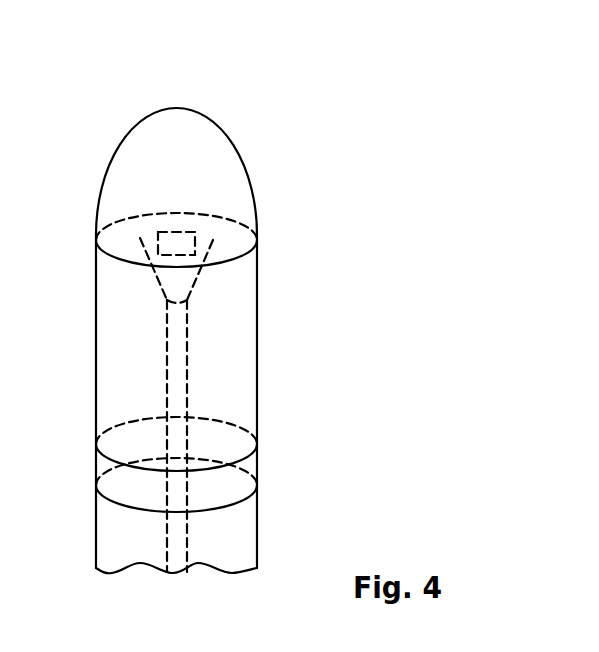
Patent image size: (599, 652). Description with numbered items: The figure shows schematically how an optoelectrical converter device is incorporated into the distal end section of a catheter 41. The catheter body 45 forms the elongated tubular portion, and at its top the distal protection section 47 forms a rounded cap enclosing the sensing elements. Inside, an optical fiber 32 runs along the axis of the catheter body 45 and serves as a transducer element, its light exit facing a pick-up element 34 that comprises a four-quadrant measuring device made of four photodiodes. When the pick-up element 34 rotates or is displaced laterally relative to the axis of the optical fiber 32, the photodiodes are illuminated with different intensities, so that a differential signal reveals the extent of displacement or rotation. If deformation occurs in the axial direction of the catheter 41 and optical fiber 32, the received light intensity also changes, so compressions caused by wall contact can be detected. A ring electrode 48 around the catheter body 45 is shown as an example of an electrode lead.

The catheter 41 is at (372, 148).
The distal protection section 47 is at (222, 108).
The pick-up element 34 is at (257, 234).
The optical fiber 32 is at (187, 360).
The ring electrode 48 is at (237, 477).
The catheter body 45 is at (237, 533).